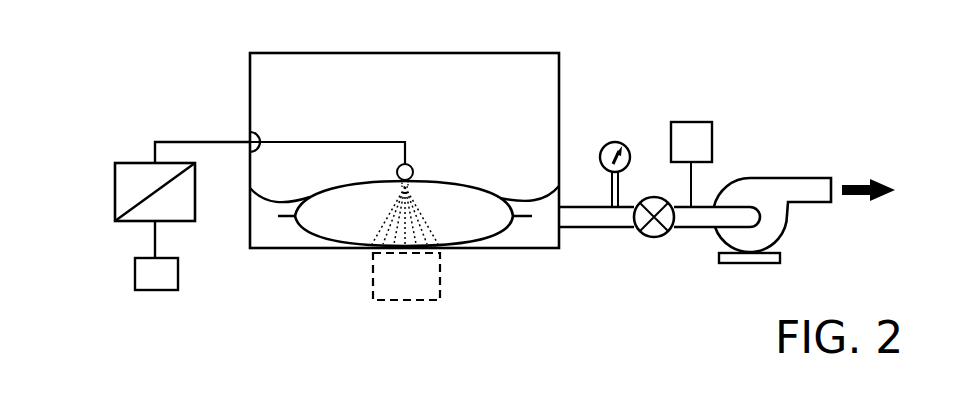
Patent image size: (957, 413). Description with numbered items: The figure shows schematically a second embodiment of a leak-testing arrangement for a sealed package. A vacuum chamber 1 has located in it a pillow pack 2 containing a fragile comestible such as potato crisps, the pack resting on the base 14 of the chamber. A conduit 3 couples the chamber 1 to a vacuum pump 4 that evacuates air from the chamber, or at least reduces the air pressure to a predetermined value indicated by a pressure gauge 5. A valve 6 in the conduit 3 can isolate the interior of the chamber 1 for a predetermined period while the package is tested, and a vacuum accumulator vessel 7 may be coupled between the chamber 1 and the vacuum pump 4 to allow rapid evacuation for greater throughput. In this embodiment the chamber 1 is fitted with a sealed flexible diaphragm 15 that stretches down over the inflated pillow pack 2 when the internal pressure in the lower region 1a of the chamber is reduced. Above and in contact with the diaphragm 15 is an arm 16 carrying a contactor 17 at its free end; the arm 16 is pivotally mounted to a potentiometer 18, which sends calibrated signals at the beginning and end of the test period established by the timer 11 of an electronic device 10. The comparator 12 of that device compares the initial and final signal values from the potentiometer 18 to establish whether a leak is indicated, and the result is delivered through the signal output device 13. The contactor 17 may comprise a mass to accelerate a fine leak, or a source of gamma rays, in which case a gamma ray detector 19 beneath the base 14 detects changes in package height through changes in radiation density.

The vacuum chamber 1 is at (250, 80).
The lower region of chamber 1a is at (519, 235).
The pillow pack 2 is at (322, 226).
The conduit 3 is at (583, 227).
The vacuum pump 4 is at (778, 187).
The pressure gauge 5 is at (613, 142).
The valve 6 is at (653, 238).
The vacuum accumulator vessel 7 is at (693, 128).
The electronic device 10 is at (115, 183).
The timer 11 is at (143, 182).
The comparator 12 is at (187, 205).
The signal output device 13 is at (143, 272).
The base 14 is at (285, 250).
The sealed flexible diaphragm 15 is at (535, 195).
The arm 16 is at (358, 140).
The contactor 17 is at (410, 165).
The potentiometer 18 is at (258, 133).
The gamma ray detector 19 is at (438, 280).